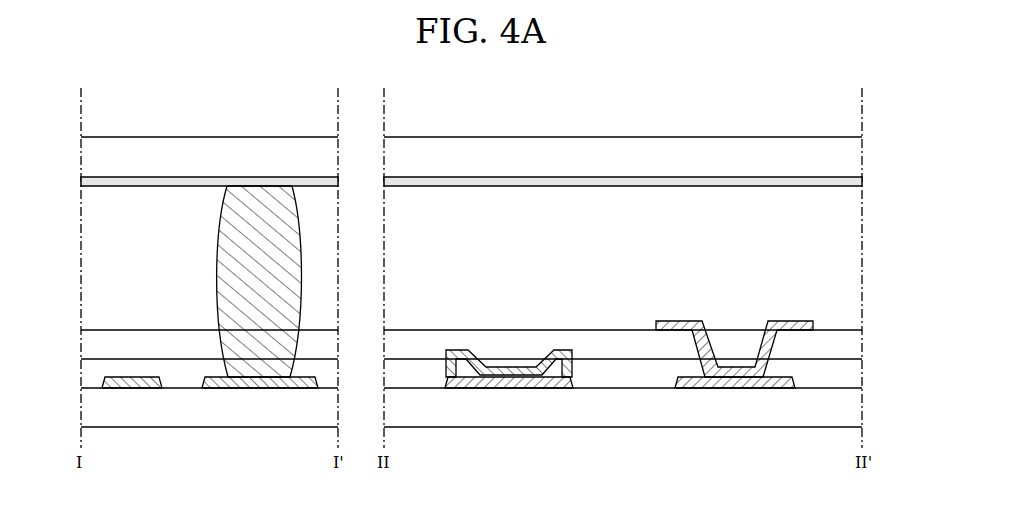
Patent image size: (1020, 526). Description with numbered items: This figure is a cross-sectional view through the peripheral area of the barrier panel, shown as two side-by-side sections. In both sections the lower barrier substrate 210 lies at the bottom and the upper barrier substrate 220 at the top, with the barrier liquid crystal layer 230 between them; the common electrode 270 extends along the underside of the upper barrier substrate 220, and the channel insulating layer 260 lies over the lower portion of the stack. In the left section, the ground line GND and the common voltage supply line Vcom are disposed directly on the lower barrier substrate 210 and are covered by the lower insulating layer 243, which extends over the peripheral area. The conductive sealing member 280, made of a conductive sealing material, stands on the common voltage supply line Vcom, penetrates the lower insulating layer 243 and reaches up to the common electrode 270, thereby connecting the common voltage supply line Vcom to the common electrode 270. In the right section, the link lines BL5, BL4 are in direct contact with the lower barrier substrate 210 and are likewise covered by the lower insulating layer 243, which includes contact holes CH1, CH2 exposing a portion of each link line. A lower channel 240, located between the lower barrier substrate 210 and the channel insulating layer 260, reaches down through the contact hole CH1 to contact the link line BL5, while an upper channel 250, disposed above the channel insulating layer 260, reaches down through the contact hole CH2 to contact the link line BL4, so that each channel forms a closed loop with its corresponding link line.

The lower barrier substrate 210 is at (92, 408).
The upper barrier substrate 220 is at (97, 148).
The barrier liquid crystal layer 230 is at (92, 231).
The lower channel 240 is at (517, 390).
The lower insulating layer 243 is at (470, 417).
The upper channel 250 is at (815, 322).
The channel insulating layer 260 is at (92, 340).
The common electrode 270 is at (82, 181).
The conductive sealing member 280 is at (225, 270).
The ground line GND is at (133, 390).
The common voltage supply line Vcom is at (257, 390).
The link line BL5 is at (465, 390).
The link line BL4 is at (693, 390).
The contact hole CH1 is at (559, 365).
The contact hole CH2 is at (779, 348).